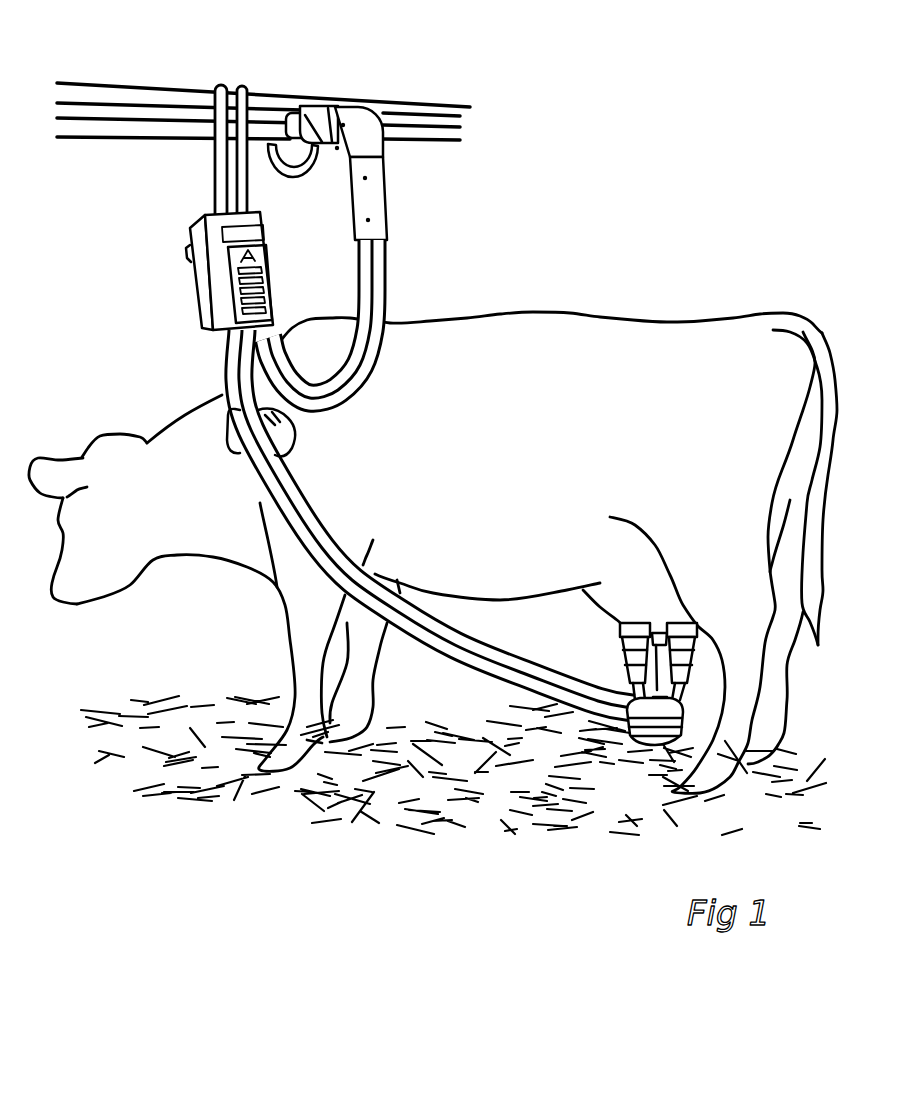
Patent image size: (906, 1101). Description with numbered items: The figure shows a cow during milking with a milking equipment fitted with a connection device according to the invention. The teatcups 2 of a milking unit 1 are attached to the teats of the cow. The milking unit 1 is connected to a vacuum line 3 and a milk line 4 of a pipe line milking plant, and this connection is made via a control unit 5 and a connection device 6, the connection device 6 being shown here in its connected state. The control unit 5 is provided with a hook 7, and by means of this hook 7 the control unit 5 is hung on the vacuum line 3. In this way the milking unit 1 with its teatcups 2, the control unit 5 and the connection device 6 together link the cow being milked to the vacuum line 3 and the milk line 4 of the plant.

The milking unit 1 is at (565, 717).
The teatcups 2 is at (622, 663).
The vacuum line 3 is at (140, 88).
The milk line 4 is at (140, 140).
The control unit 5 is at (198, 312).
The connection device 6 is at (363, 98).
The hook 7 is at (240, 86).